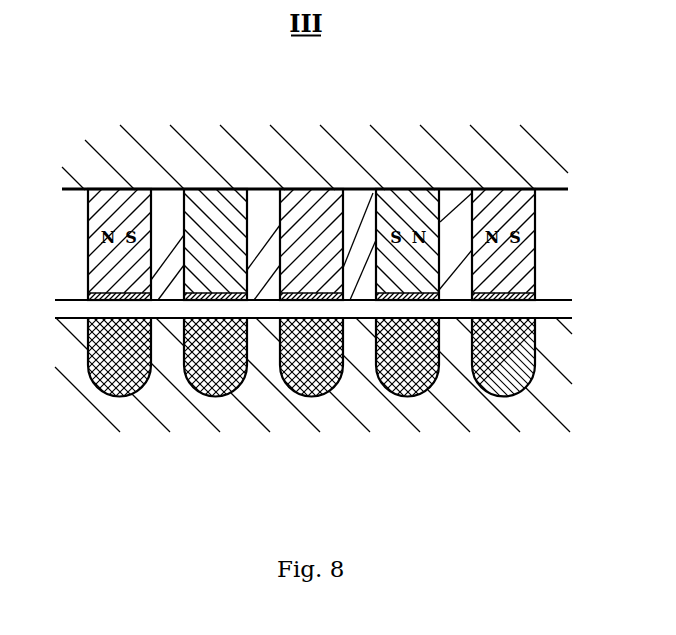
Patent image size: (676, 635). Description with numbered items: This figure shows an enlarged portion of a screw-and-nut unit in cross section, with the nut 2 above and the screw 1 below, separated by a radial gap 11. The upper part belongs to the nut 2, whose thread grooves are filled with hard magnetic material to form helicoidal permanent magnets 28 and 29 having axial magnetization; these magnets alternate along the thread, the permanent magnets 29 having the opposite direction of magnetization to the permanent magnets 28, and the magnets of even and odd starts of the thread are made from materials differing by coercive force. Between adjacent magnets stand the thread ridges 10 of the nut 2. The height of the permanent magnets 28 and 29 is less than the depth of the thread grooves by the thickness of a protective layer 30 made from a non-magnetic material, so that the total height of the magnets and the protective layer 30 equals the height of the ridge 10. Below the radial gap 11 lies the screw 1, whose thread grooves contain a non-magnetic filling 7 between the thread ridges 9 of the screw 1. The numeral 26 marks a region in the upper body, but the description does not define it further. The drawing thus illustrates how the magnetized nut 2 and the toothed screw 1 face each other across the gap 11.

The screw 1 is at (463, 407).
The nut 2 is at (148, 123).
The non-magnetic filling 7 is at (197, 395).
The thread ridge of the screw 9 is at (257, 333).
The thread ridge of the nut 10 is at (163, 227).
The radial gap 11 is at (118, 397).
The magnetic return yoke 26 is at (478, 157).
The helicoidal permanent magnet 28 is at (230, 190).
The helicoidal permanent magnet 29 is at (343, 190).
The protective layer 30 is at (88, 352).